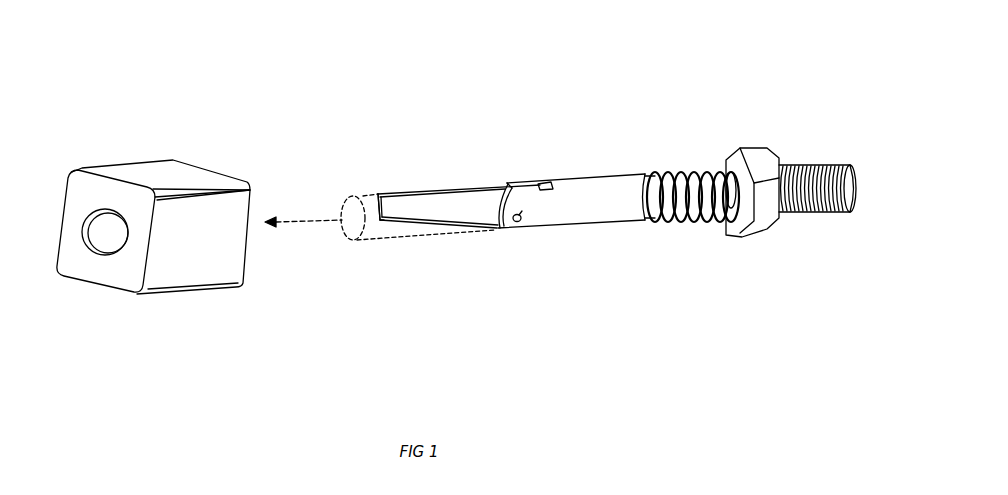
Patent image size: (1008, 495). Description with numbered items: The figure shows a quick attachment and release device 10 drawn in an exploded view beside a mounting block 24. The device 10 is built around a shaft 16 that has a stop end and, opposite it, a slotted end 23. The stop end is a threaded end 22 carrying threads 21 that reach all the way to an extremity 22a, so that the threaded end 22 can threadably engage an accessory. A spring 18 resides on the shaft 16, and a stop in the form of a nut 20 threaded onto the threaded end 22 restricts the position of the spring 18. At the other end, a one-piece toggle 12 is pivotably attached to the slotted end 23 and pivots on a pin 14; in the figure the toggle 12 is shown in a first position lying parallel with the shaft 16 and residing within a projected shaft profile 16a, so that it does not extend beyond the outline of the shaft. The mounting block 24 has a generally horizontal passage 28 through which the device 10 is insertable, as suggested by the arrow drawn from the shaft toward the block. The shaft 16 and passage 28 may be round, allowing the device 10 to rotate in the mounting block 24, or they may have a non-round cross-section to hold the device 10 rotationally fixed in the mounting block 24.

The quick attachment and release device 10 is at (608, 140).
The toggle 12 is at (422, 210).
The pin 14 is at (515, 223).
The shaft 16 is at (588, 210).
The projected shaft profile 16a is at (372, 195).
The spring 18 is at (680, 227).
The nut 20 is at (765, 212).
The threads 21 is at (835, 165).
The threaded end 22 is at (832, 199).
The extremity 22a is at (850, 193).
The slotted end 23 is at (520, 183).
The mounting block 24 is at (101, 128).
The passage 28 is at (110, 243).